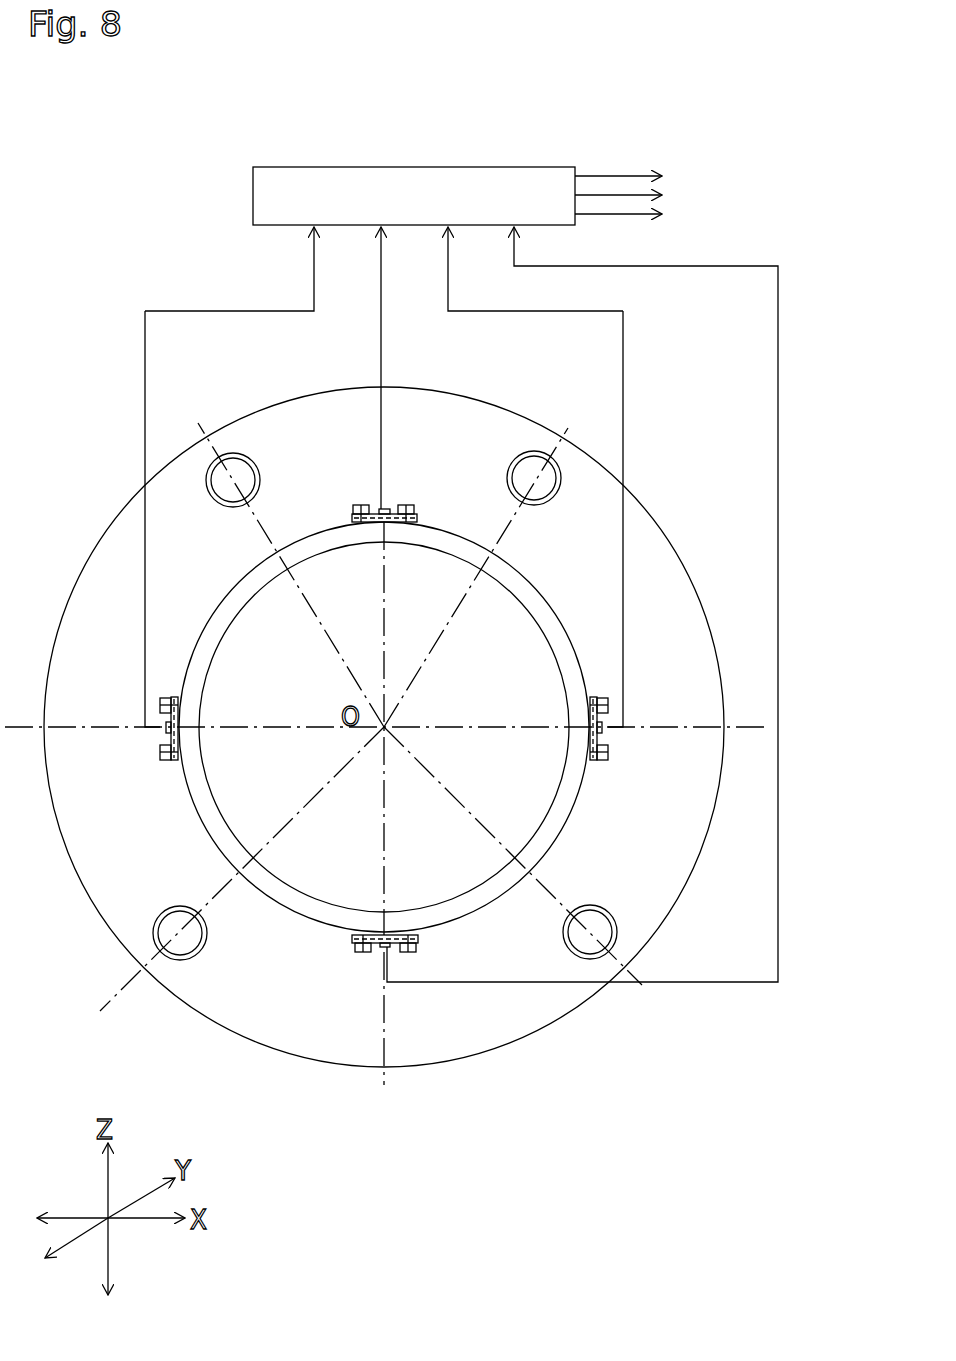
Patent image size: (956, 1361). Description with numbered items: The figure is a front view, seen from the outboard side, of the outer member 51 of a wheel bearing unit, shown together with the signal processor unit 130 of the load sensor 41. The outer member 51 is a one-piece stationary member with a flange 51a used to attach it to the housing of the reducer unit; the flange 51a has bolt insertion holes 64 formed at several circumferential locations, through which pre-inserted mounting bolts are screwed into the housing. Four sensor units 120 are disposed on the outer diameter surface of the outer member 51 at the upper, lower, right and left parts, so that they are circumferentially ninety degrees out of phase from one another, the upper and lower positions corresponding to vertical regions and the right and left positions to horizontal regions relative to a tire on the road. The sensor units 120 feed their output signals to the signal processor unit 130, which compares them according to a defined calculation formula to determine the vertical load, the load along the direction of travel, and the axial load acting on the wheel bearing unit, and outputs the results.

The load sensor 41 is at (461, 526).
The signal processor unit 130 is at (428, 167).
The outer member 51 is at (384, 649).
The flange 51a is at (617, 478).
The bolt insertion holes 64 is at (216, 462).
The sensor units 120 is at (401, 534).